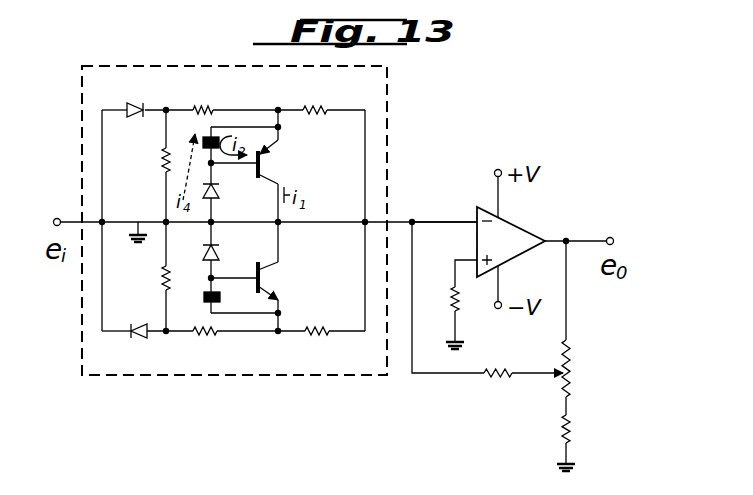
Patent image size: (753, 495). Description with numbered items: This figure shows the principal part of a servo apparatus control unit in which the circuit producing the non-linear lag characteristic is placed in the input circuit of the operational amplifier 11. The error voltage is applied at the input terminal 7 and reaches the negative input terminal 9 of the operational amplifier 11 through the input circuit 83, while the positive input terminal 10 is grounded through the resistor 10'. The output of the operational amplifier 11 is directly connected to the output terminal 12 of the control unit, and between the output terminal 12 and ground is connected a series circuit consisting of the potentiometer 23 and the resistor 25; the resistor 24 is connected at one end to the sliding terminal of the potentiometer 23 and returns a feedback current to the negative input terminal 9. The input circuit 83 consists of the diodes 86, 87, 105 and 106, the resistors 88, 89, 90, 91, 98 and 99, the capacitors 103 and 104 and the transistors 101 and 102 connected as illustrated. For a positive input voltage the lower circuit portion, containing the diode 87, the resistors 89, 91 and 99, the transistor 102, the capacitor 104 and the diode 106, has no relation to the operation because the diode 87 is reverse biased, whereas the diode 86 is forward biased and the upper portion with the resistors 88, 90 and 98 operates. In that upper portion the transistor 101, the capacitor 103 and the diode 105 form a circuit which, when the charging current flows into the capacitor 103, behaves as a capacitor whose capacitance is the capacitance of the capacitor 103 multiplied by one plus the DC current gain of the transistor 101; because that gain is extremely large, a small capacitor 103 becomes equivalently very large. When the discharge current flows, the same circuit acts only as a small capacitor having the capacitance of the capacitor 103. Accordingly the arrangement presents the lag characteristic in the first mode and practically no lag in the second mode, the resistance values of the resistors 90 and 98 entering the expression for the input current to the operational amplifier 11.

The input terminal 7 is at (57, 218).
The negative input terminal 9 is at (466, 219).
The positive input terminal 10 is at (458, 257).
The resistor 10' is at (469, 318).
The operational amplifier 11 is at (522, 226).
The output terminal 12 is at (610, 237).
The potentiometer 23 is at (573, 374).
The resistor 24 is at (500, 378).
The resistor 25 is at (562, 430).
The input circuit 83 is at (241, 375).
The diode 86 is at (136, 108).
The diode 87 is at (139, 336).
The resistor 88 is at (163, 162).
The resistor 89 is at (162, 278).
The resistor 90 is at (203, 106).
The resistor 91 is at (205, 336).
The resistor 98 is at (315, 106).
The resistor 99 is at (318, 336).
The transistor 101 is at (270, 166).
The transistor 102 is at (258, 262).
The capacitor 103 is at (203, 140).
The capacitor 104 is at (220, 297).
The diode 105 is at (219, 194).
The diode 106 is at (204, 252).